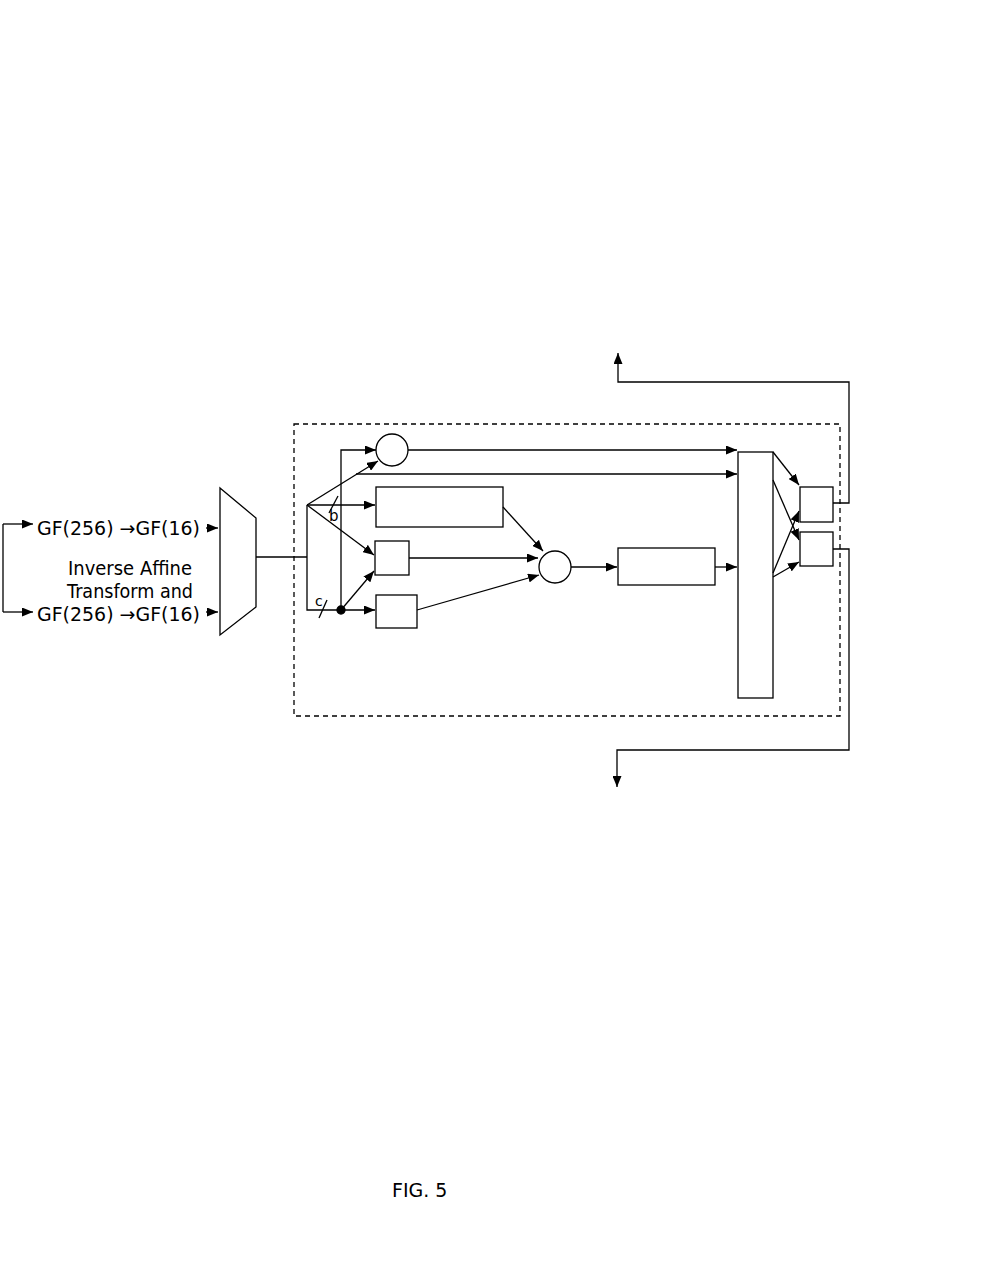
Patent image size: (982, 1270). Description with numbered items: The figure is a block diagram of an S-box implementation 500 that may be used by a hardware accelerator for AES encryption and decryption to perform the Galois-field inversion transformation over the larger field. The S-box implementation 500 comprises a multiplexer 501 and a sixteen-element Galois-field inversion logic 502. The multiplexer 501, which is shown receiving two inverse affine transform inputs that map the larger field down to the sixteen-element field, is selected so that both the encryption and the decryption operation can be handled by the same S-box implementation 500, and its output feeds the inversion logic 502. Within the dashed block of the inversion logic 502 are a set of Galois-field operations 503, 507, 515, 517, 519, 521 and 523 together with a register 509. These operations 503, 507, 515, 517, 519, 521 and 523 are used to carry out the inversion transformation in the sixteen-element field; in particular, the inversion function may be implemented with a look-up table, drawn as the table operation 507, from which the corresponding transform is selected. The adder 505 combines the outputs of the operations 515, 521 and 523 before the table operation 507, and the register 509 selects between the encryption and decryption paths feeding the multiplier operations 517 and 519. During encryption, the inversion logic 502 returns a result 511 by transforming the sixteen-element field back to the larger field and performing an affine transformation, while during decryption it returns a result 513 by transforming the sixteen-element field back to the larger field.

The S-box implementation 500 is at (145, 102).
The multiplexer 501 is at (222, 490).
The GF(16) inversion logic 502 is at (413, 716).
The GF(16) operation 503 is at (392, 434).
The adder 505 is at (555, 583).
The GF(16) operation 507 is at (648, 585).
The register 509 is at (743, 698).
The result 511 is at (594, 295).
The result 513 is at (612, 835).
The GF(16) operation 515 is at (409, 570).
The GF(16) operation 517 is at (812, 567).
The GF(16) operation 519 is at (833, 522).
The GF(16) operation 521 is at (417, 622).
The GF(16) operation 523 is at (503, 490).